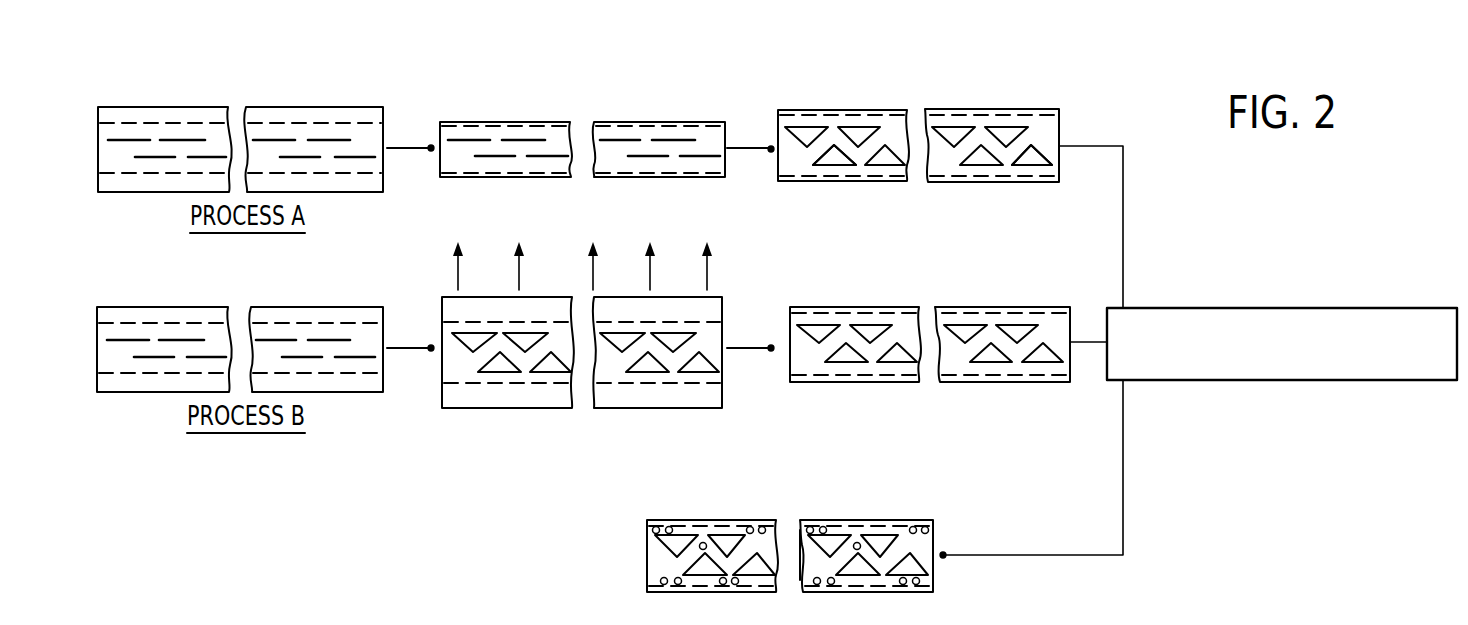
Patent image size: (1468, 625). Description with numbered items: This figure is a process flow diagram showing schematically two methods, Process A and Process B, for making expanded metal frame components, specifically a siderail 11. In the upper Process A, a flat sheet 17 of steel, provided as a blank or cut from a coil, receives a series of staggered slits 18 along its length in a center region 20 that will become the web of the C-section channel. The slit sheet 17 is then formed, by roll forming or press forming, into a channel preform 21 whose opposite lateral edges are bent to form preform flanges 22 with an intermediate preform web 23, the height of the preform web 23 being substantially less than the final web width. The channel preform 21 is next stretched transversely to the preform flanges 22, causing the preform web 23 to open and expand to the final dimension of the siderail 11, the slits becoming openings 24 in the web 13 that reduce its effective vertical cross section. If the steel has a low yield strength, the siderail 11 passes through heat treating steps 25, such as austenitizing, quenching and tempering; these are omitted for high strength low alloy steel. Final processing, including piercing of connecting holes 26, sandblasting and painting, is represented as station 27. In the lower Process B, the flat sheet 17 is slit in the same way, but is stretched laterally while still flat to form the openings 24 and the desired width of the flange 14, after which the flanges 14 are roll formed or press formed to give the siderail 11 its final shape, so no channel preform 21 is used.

The siderail 11 is at (1070, 122).
The intermediate web 13 is at (1000, 120).
The upper and lower flanges 14 is at (845, 108).
The flat sheet 17 is at (148, 107).
The staggered slits 18 is at (302, 157).
The center region 20 is at (112, 162).
The channel preform 21 is at (529, 116).
The preform flanges 22 is at (470, 122).
The preform web 23 is at (705, 135).
The openings 24 is at (830, 157).
The heat treating steps 25 is at (1231, 307).
The connecting holes 26 is at (913, 526).
The station 27 is at (733, 506).